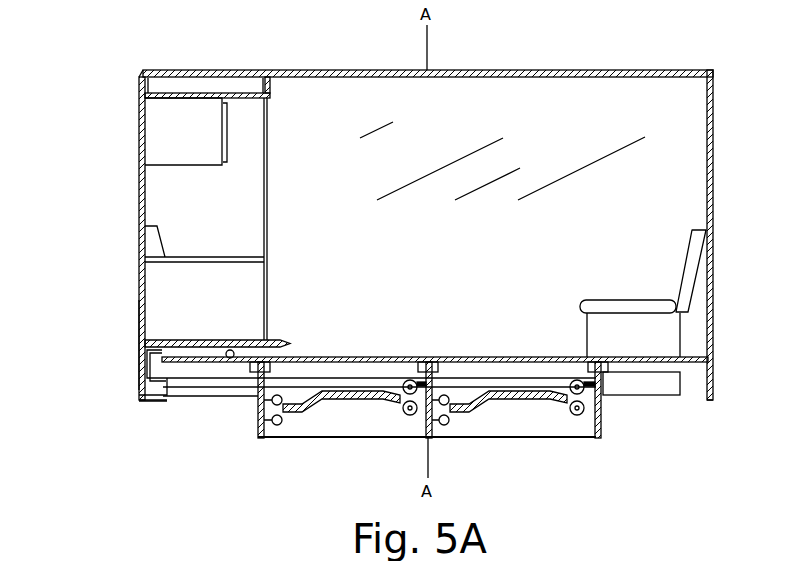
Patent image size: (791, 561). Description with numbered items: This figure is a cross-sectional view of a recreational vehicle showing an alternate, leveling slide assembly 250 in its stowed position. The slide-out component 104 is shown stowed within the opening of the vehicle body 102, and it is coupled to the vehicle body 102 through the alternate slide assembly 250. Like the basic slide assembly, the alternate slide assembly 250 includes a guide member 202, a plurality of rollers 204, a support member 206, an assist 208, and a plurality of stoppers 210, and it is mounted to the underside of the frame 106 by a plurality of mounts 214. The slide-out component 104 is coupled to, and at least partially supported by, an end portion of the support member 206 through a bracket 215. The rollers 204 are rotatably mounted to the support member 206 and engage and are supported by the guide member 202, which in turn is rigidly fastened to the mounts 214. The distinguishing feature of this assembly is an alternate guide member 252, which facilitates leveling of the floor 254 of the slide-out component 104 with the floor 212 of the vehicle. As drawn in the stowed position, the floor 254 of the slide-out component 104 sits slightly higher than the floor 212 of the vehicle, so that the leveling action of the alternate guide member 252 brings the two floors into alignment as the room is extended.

The vehicle body 102 is at (507, 72).
The slide-out component 104 is at (140, 160).
The frame 106 is at (272, 350).
The guide member 202 is at (490, 395).
The rollers 204 is at (400, 383).
The support member 206 is at (187, 396).
The assist 208 is at (657, 395).
The stoppers 210 is at (272, 420).
The floor of vehicle 212 is at (562, 337).
The mounts 214 is at (262, 438).
The bracket 215 is at (140, 343).
The alternate slide assembly 250 is at (641, 481).
The alternate guide member 252 is at (343, 396).
The floor of slide-out component 254 is at (175, 340).